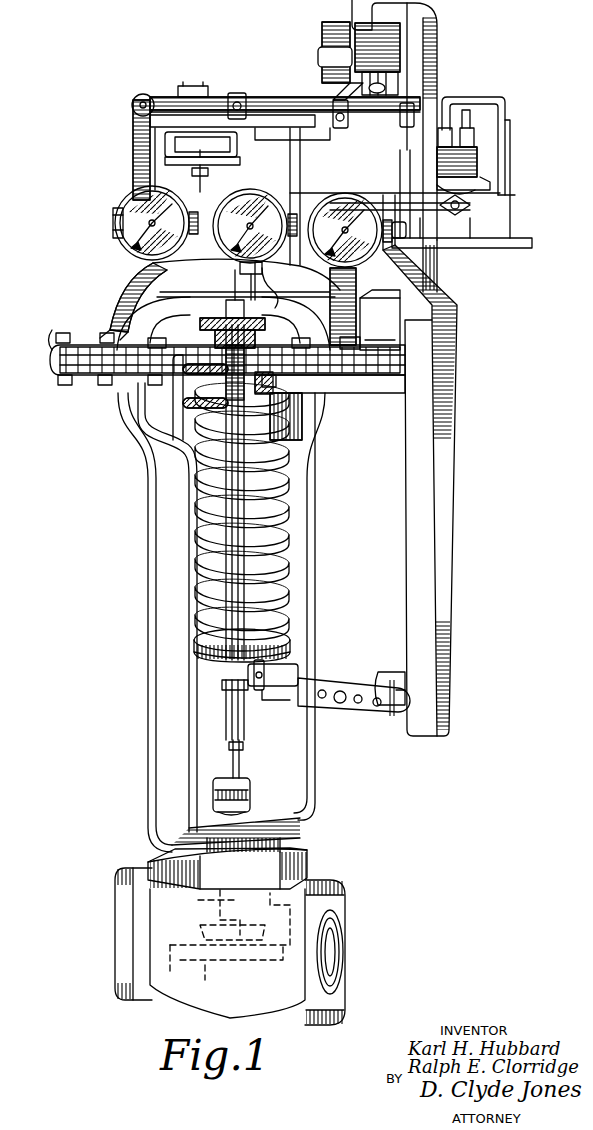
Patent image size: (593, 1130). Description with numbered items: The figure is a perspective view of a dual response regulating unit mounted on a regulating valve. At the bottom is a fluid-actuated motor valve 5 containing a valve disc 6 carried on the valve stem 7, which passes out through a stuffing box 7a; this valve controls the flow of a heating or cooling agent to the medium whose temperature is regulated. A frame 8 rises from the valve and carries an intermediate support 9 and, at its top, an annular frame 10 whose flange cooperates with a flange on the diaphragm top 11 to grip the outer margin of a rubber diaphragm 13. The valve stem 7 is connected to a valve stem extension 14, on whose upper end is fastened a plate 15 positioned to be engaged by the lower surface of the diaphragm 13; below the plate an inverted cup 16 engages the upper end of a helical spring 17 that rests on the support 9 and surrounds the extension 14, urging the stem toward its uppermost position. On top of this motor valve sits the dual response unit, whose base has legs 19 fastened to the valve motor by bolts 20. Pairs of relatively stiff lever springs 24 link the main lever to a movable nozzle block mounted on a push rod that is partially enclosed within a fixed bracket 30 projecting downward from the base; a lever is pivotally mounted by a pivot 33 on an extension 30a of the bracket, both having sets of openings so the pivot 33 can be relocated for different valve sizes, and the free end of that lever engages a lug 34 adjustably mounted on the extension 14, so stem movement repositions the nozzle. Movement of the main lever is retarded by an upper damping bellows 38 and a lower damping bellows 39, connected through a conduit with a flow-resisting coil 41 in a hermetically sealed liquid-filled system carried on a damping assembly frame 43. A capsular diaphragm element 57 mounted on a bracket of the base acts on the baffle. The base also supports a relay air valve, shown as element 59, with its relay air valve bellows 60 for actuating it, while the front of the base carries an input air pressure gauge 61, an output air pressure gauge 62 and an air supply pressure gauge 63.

The fluid-actuated motor valve 5 is at (230, 936).
The valve disc 6 is at (252, 925).
The valve stem 7 is at (230, 762).
The stuffing box 7a is at (246, 800).
The frame 8 is at (163, 770).
The intermediate support 9 is at (212, 645).
The annular frame 10 is at (105, 385).
The diaphragm top 11 is at (205, 292).
The rubber diaphragm 13 is at (72, 362).
The valve stem extension 14 is at (250, 712).
The plate 15 is at (214, 338).
The inverted cup 16 is at (298, 420).
The helical spring 17 is at (290, 492).
The legs 19 is at (135, 265).
The bolts 20 is at (94, 316).
The lever springs 24 is at (252, 98).
The fixed bracket 30 is at (446, 590).
The extension of the bracket 30a is at (377, 682).
The pivot 33 is at (342, 703).
The lug 34 is at (300, 662).
The upper damping bellows 38 is at (400, 52).
The lower damping bellows 39 is at (345, 190).
The flow-resisting coil 41 is at (327, 22).
The damping assembly frame 43 is at (438, 22).
The capsular diaphragm element 57 is at (230, 148).
The valve block 59 is at (478, 150).
The relay air valve bellows 60 is at (492, 188).
The input air pressure gauge 61 is at (126, 200).
The output air pressure gauge 62 is at (256, 195).
The air supply pressure gauge 63 is at (280, 283).